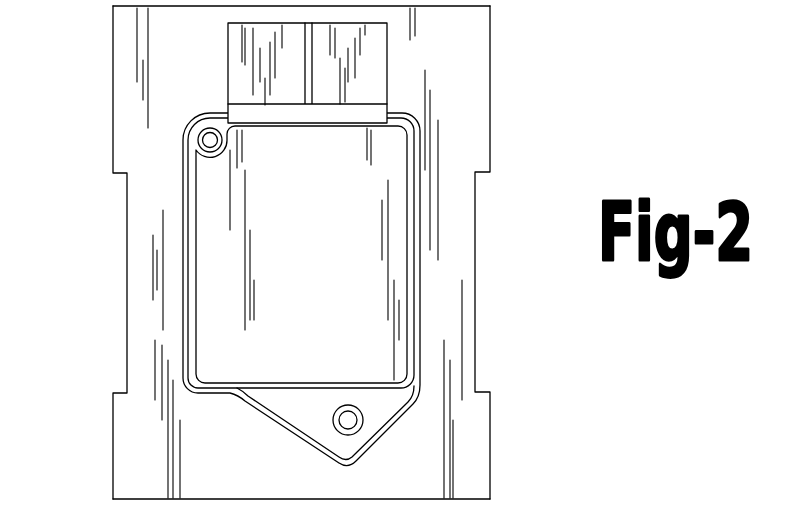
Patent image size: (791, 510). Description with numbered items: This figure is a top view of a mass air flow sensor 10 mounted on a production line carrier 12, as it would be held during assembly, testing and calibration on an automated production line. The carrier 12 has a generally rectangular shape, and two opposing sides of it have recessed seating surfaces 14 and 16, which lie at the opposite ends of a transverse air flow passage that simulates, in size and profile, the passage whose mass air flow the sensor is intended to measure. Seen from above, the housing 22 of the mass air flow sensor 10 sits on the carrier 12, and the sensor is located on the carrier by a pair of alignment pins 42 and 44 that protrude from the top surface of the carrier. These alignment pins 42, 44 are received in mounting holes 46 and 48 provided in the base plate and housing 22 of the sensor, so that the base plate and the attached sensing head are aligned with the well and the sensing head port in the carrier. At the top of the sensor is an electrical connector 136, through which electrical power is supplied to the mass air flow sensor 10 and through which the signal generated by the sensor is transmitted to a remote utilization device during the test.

The mass air flow sensor 10 is at (420, 155).
The production line carrier 12 is at (490, 47).
The recessed seating surface 14 is at (127, 240).
The recessed seating surface 16 is at (475, 222).
The housing 22 is at (182, 295).
The alignment pin 42 is at (186, 120).
The alignment pin 44 is at (358, 428).
The mounting hole 46 is at (205, 126).
The mounting hole 48 is at (390, 403).
The electrical connector 136 is at (388, 62).